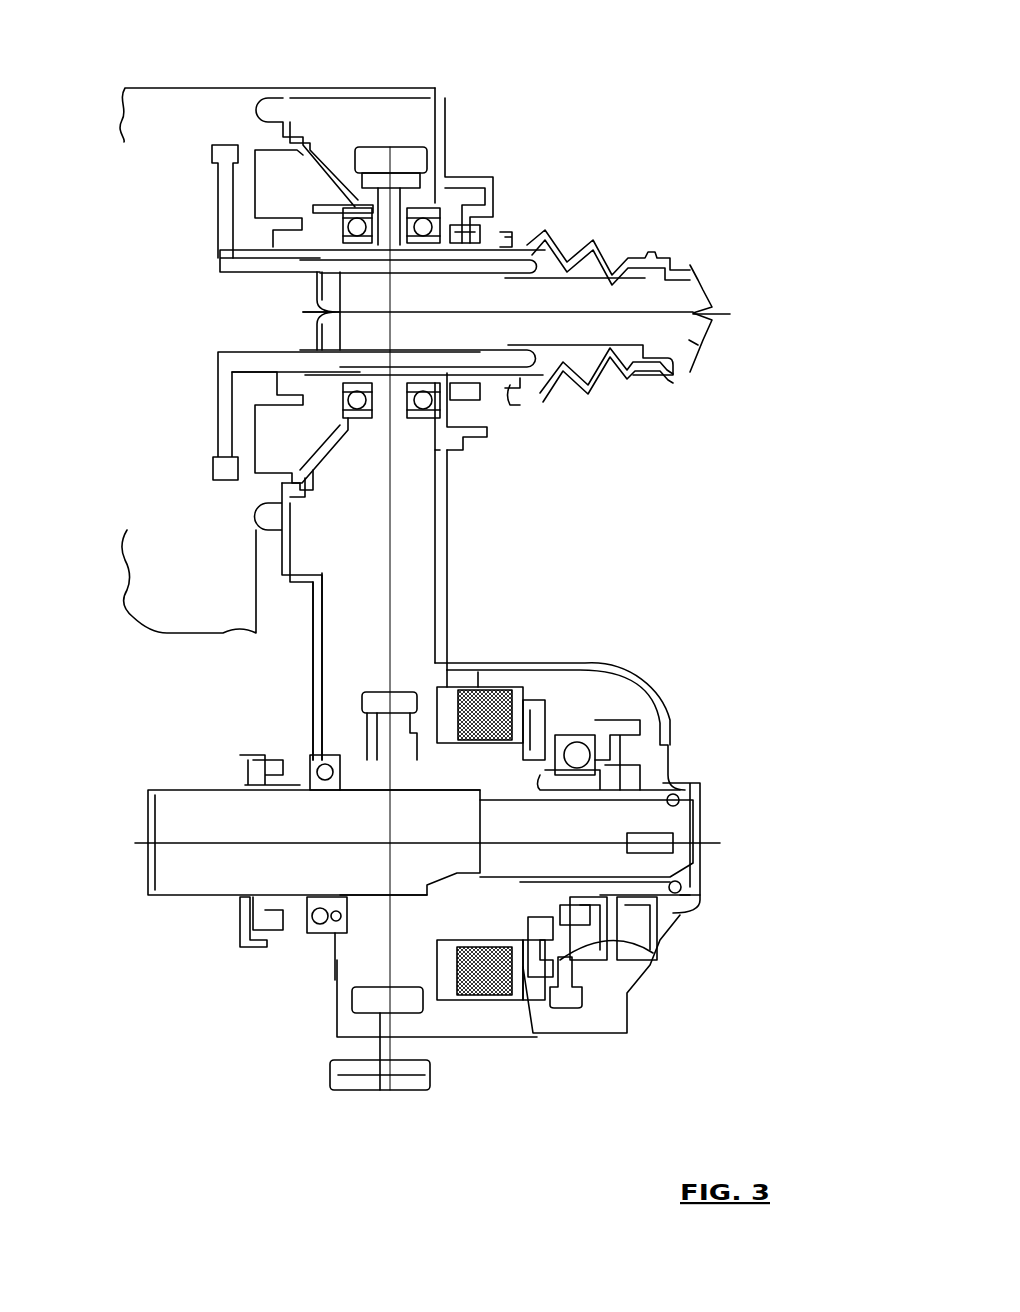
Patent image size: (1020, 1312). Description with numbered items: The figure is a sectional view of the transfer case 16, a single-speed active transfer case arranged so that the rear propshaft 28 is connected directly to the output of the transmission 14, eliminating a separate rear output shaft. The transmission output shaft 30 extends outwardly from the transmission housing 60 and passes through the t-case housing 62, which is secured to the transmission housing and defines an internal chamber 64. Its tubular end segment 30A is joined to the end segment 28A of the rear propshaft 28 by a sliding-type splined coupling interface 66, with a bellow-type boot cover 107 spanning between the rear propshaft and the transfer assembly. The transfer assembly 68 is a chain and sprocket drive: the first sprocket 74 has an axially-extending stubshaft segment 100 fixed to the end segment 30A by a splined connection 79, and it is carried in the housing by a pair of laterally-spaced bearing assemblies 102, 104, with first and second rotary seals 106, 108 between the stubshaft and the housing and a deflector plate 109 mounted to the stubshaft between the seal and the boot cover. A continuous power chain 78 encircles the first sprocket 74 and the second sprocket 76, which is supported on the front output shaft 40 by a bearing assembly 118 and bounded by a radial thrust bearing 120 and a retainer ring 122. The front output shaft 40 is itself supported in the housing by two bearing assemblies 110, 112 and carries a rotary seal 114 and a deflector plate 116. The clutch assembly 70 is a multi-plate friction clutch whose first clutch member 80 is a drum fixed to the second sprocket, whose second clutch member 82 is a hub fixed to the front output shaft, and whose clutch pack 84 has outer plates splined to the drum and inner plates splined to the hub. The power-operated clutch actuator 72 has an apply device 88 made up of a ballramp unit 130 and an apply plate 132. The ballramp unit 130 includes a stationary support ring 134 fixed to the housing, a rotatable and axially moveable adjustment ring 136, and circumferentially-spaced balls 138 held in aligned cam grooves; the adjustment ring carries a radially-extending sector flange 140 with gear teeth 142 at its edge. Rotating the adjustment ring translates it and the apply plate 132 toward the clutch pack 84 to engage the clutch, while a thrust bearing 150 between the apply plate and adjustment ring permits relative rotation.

The transmission 14 is at (133, 74).
The transfer case 16 is at (560, 526).
The rear propshaft 28 is at (692, 266).
The end segment of rear propshaft 28A is at (705, 338).
The transmission output shaft 30 is at (247, 265).
The end segment of transmission output shaft 30A is at (414, 276).
The front output shaft 40 is at (170, 888).
The transmission housing 60 is at (182, 88).
The t-case housing 62 is at (308, 88).
The internal chamber 64 is at (425, 598).
The coupling interface 66 is at (468, 340).
The transfer assembly 68 is at (348, 995).
The clutch assembly 70 is at (494, 1015).
The power-operated clutch actuator 72 is at (704, 717).
The first sprocket 74 is at (410, 178).
The second sprocket 76 is at (373, 714).
The power chain 78 is at (372, 160).
The splined connection 79 is at (520, 247).
The first clutch member 80 is at (478, 668).
The second clutch member 82 is at (480, 800).
The multi-plate clutch pack 84 is at (513, 683).
The apply device 88 is at (600, 696).
The stubshaft segment 100 is at (532, 382).
The bearing assembly 102 is at (352, 258).
The bearing assembly 104 is at (422, 218).
The first rotary seal 106 is at (320, 397).
The boot cover 107 is at (630, 250).
The second rotary seal 108 is at (485, 205).
The deflector plate 109 is at (495, 440).
The bearing assembly 110 is at (325, 930).
The bearing assembly 112 is at (683, 788).
The rotary seal 114 is at (265, 770).
The deflector plate 116 is at (240, 930).
The bearing assembly 118 is at (393, 795).
The radial thrust bearing 120 is at (380, 690).
The retainer ring 122 is at (340, 798).
The ballramp unit 130 is at (600, 947).
The apply plate 132 is at (497, 985).
The support ring 134 is at (647, 908).
The adjustment ring 136 is at (573, 735).
The balls 138 is at (588, 748).
The sector flange 140 is at (612, 950).
The gear teeth 142 is at (567, 1000).
The thrust bearing 150 is at (538, 795).